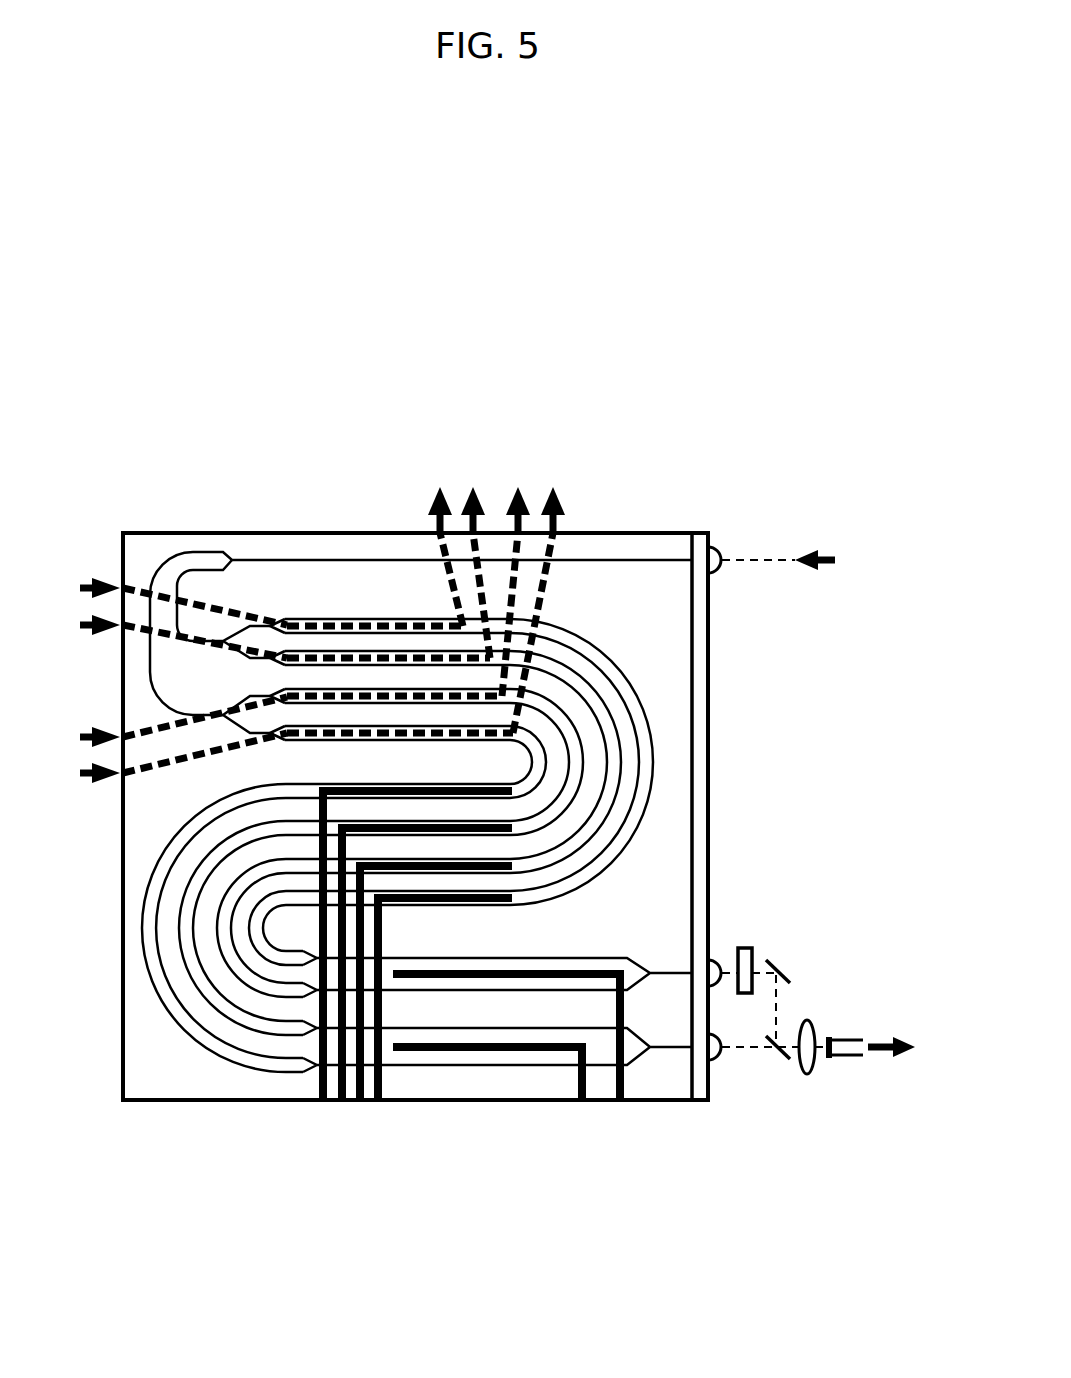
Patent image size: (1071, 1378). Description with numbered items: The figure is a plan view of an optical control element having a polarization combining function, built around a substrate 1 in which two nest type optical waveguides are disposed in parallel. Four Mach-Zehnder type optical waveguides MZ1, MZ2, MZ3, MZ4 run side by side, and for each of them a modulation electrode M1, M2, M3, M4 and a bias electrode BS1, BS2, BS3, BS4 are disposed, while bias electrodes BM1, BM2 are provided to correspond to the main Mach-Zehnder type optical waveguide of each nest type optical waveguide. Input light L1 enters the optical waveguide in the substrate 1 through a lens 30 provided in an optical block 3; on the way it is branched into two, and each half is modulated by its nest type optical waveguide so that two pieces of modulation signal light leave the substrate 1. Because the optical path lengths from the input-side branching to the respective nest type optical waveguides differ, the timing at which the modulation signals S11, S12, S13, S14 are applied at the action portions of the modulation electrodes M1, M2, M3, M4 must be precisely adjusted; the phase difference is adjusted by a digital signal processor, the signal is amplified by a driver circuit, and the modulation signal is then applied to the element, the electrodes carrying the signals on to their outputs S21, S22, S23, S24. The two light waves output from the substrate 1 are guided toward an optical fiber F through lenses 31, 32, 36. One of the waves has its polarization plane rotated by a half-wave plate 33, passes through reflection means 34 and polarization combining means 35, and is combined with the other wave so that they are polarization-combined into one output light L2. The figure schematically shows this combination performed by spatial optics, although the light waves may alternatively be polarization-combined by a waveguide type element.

The substrate 1 is at (630, 533).
The optical block 3 is at (694, 533).
The lens 30 is at (716, 548).
The lens 31 is at (712, 958).
The lens 32 is at (712, 1061).
The half-wave plate 33 is at (745, 946).
The reflection means 34 is at (790, 961).
The polarization combining means 35 is at (770, 1061).
The lens 36 is at (811, 1075).
The optical fiber F is at (852, 1059).
The input light L1 is at (798, 563).
The output light L2 is at (836, 1019).
The modulation electrode M1 is at (284, 618).
The modulation electrode M2 is at (320, 652).
The modulation electrode M3 is at (362, 690).
The modulation electrode M4 is at (404, 727).
The Mach-Zehnder type optical waveguide MZ1 is at (624, 660).
The Mach-Zehnder type optical waveguide MZ2 is at (617, 705).
The Mach-Zehnder type optical waveguide MZ3 is at (597, 757).
The Mach-Zehnder type optical waveguide MZ4 is at (554, 789).
The bias electrode BS1 is at (412, 905).
The bias electrode BS2 is at (447, 870).
The bias electrode BS3 is at (460, 833).
The bias electrode BS4 is at (505, 797).
The bias electrode BM1 is at (613, 976).
The bias electrode BM2 is at (523, 1051).
The modulation signal S11 is at (159, 599).
The modulation signal S12 is at (159, 635).
The modulation signal S13 is at (159, 725).
The modulation signal S14 is at (159, 761).
The modulation signal output S21 is at (440, 542).
The modulation signal output S22 is at (469, 543).
The modulation signal output S23 is at (515, 577).
The modulation signal output S24 is at (545, 580).